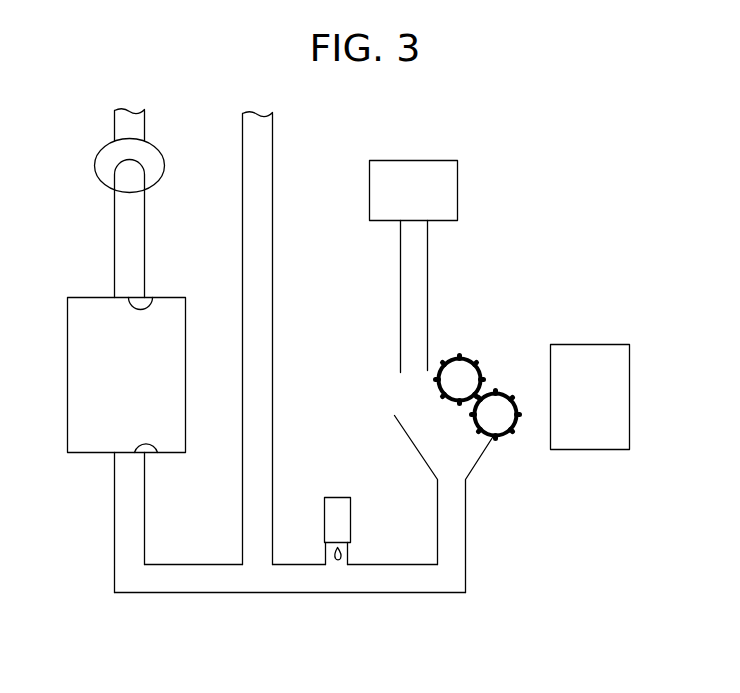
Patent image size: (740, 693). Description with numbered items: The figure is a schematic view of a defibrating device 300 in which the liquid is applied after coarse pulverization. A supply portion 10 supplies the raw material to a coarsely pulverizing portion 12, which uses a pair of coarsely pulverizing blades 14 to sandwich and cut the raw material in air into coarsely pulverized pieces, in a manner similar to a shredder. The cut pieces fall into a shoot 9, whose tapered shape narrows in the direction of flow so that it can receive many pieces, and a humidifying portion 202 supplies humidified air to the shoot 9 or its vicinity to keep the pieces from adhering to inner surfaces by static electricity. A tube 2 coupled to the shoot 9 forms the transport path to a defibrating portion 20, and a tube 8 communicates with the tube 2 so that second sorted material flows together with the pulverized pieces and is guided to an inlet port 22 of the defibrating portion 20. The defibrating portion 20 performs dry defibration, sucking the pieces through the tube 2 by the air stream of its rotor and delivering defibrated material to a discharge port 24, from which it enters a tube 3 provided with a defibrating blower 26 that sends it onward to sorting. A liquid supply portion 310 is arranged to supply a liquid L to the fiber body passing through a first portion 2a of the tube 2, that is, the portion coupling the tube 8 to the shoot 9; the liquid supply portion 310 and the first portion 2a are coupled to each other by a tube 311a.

The tube 3 is at (128, 123).
The defibrating blower 26 is at (148, 158).
The discharge port 24 is at (150, 296).
The inlet port 22 is at (156, 447).
The defibrating portion 20 is at (87, 461).
The tube 8 is at (262, 124).
The humidifying portion 202 is at (412, 180).
The coarsely pulverizing blades 14 is at (457, 368).
The coarsely pulverizing portion 12 is at (401, 398).
The shoot 9 is at (404, 443).
The supply portion 10 is at (640, 349).
The defibrating device 300 is at (625, 276).
The liquid supply portion 310 is at (340, 515).
The tube 311a is at (343, 550).
The liquid L is at (325, 552).
The first portion 2a is at (313, 577).
The tube 2 is at (398, 577).